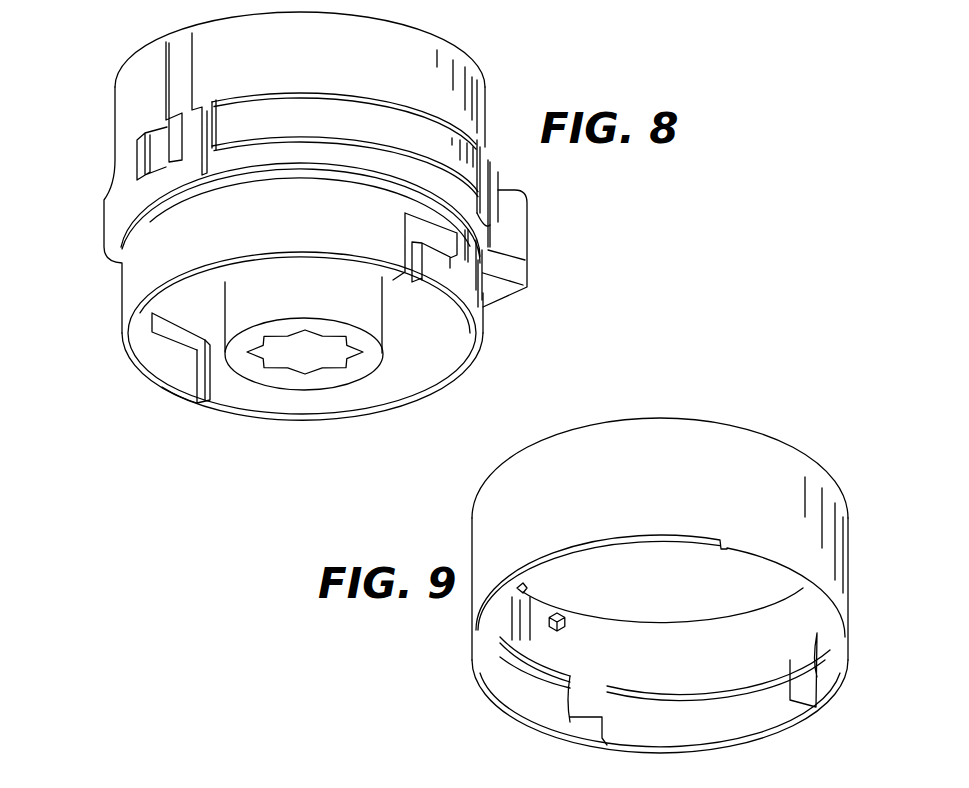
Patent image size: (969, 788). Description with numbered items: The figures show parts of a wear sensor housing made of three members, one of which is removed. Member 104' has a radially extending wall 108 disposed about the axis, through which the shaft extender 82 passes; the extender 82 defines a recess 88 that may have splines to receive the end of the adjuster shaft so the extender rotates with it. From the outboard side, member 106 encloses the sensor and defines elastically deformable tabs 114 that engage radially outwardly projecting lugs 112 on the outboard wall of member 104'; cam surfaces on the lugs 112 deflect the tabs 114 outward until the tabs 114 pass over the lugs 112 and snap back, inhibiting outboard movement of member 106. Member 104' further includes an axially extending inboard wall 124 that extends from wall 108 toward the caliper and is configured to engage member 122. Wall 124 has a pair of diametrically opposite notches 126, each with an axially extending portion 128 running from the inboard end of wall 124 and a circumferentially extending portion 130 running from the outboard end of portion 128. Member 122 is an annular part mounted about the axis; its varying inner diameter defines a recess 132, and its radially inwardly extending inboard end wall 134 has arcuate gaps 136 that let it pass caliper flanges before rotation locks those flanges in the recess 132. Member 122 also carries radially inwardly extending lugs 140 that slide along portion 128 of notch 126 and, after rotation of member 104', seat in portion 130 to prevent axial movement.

In FIG. 8, the member 106 is at (213, 38).
In FIG. 8, the elastically deformable tabs 114 is at (152, 152).
In FIG. 8, the radially outwardly projecting lugs 112 is at (147, 172).
In FIG. 8, the axially extending inboard wall 124 is at (150, 273).
In FIG. 8, the member 104' is at (542, 223).
In FIG. 8, the radially extending wall 108 is at (460, 333).
In FIG. 8, the shaft extender 82 is at (365, 363).
In FIG. 8, the recess 88 is at (380, 352).
In FIG. 8, the circumferentially extending portion 130 is at (188, 350).
In FIG. 8, the notches 126 is at (197, 372).
In FIG. 8, the axially extending portion 128 is at (195, 375).
In FIG. 9, the member 122 is at (821, 572).
In FIG. 9, the radially inwardly extending inboard end wall 134 is at (500, 697).
In FIG. 9, the recess 132 is at (570, 728).
In FIG. 9, the arcuate gaps 136 is at (623, 742).
In FIG. 9, the radially inwardly extending lugs 140 is at (563, 613).